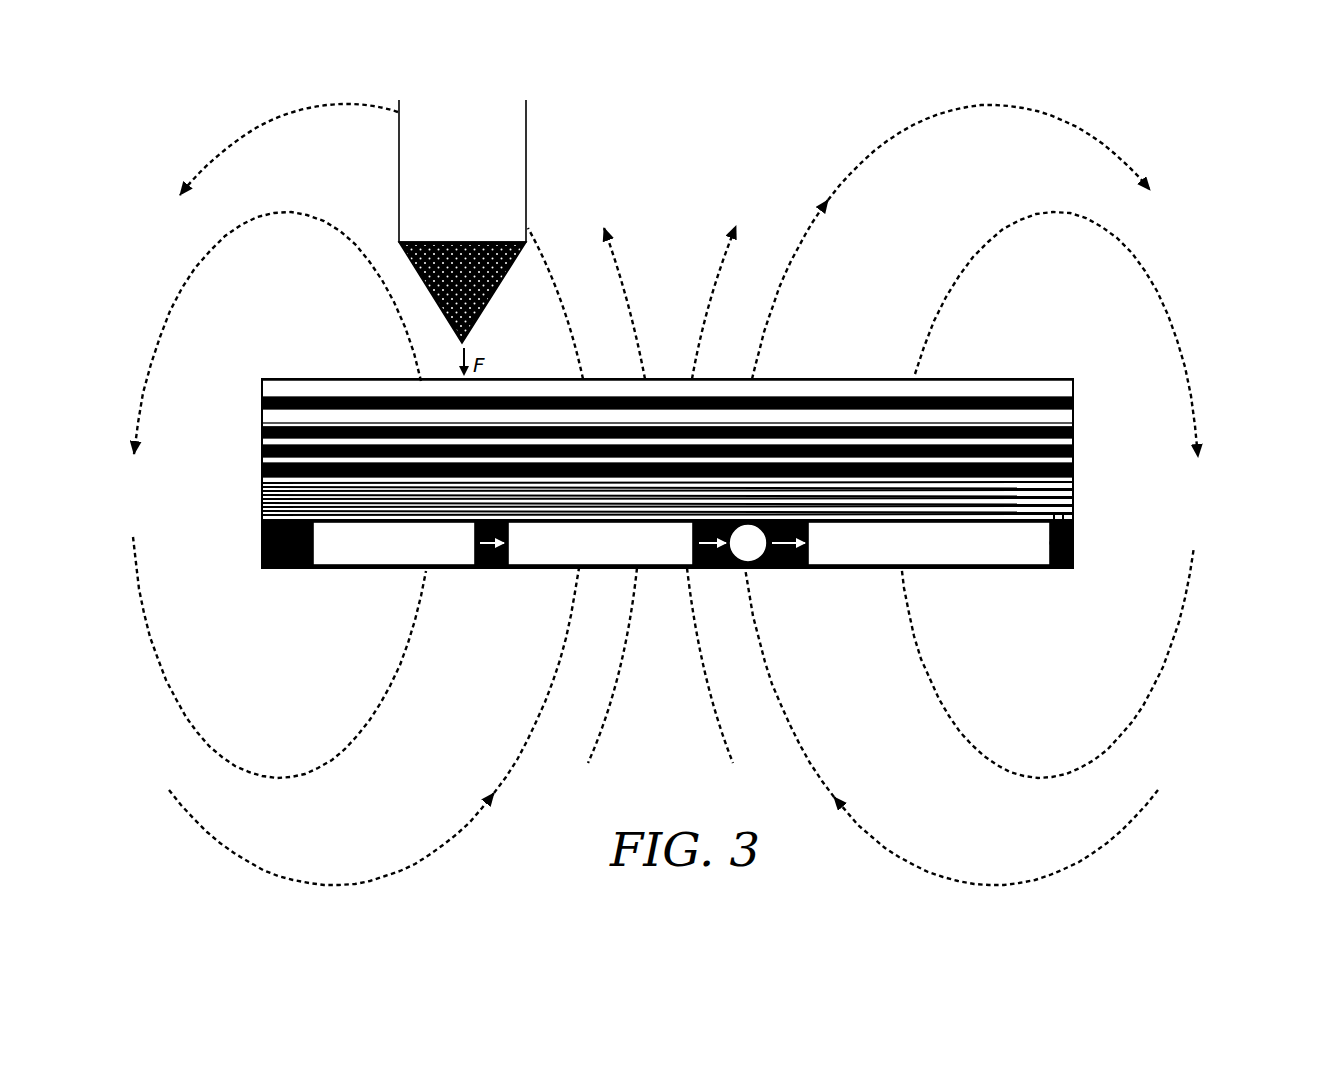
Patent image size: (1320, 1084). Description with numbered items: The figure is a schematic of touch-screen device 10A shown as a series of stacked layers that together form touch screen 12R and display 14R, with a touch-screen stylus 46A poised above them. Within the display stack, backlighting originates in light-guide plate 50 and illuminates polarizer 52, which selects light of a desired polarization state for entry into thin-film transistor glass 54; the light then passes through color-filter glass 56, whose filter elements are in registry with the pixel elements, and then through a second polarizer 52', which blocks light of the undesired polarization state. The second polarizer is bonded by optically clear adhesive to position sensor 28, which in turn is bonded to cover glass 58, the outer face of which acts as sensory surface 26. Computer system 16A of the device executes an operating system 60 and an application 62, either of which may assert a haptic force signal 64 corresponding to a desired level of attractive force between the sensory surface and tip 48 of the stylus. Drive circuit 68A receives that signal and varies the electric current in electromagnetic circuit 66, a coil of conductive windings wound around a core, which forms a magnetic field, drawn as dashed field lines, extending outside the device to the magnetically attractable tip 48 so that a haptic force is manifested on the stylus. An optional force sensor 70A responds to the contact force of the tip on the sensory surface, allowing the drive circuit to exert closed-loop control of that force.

The touch-screen device 10A is at (1222, 298).
The touch screen 12R is at (258, 380).
The display 14R is at (1077, 427).
The computer system 16A is at (302, 555).
The sensory surface 26 is at (518, 380).
The position sensor 28 is at (820, 418).
The touch-screen stylus 46A is at (443, 185).
The tip 48 is at (448, 292).
The light-guide plate 50 is at (1065, 468).
The polarizer 52 is at (667, 400).
The second polarizer 52' is at (667, 387).
The thin-film transistor glass 54 is at (973, 452).
The color-filter glass 56 is at (948, 440).
The cover glass 58 is at (308, 392).
The operating system 60 is at (613, 555).
The application 62 is at (418, 555).
The haptic force signal 64 is at (760, 555).
The electromagnetic circuit 66 is at (258, 482).
The drive circuit 68A is at (1037, 555).
The force sensor 70A is at (333, 403).